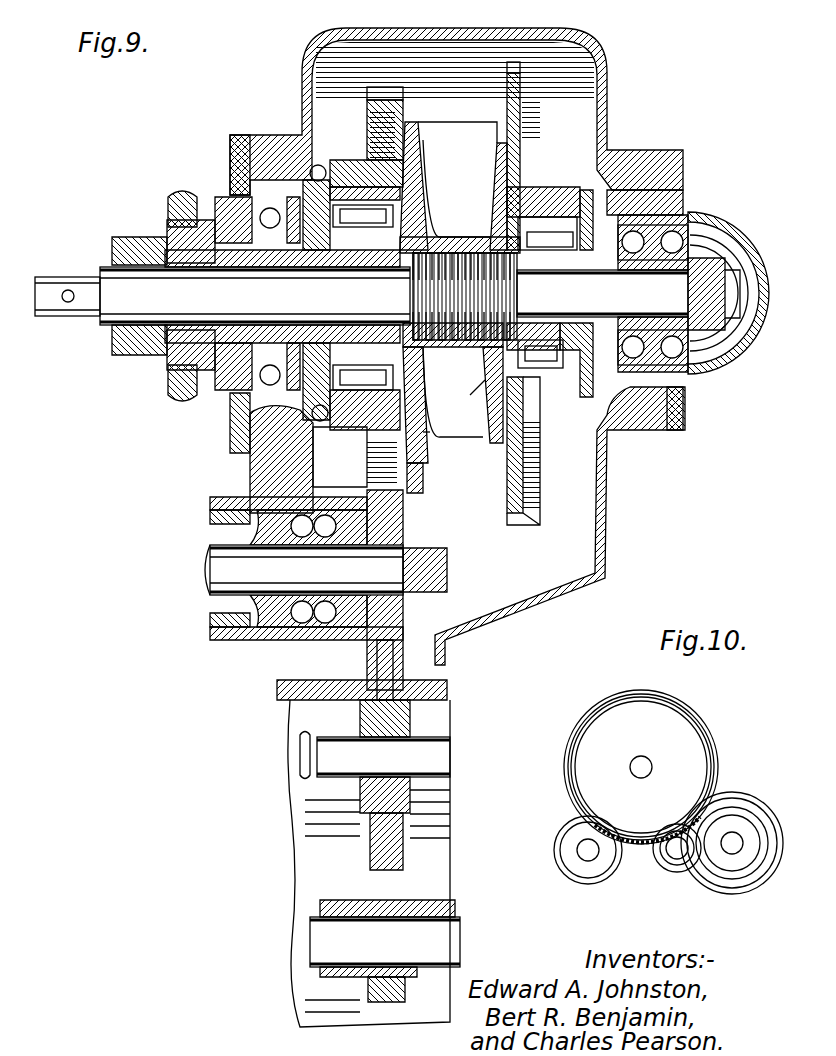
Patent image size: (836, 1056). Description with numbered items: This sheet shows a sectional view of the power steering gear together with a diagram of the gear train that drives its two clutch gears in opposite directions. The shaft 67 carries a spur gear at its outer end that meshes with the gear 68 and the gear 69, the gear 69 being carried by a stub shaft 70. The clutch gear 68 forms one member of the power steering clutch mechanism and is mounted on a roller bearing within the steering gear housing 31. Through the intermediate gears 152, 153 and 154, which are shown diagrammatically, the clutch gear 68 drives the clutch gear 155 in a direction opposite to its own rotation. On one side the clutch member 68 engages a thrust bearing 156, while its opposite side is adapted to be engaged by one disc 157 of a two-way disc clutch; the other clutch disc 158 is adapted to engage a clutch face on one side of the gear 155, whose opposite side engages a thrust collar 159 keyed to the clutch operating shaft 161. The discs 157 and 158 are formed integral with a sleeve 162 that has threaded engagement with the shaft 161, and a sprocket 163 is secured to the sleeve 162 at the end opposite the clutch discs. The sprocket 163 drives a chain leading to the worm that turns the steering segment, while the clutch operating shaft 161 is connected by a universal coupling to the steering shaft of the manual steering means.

In FIG. 9, the steering gear housing 31 is at (640, 430).
In FIG. 9, the shaft 67 is at (205, 585).
In FIG. 10, the shaft 67 is at (585, 848).
In FIG. 9, the clutch gear 68 is at (403, 488).
In FIG. 10, the clutch gear 68 is at (592, 783).
In FIG. 9, the gear 69 is at (372, 663).
In FIG. 9, the stub shaft 70 is at (450, 755).
In FIG. 10, the intermediate gear 152 is at (676, 865).
In FIG. 10, the intermediate gear 153 is at (735, 870).
In FIG. 10, the intermediate gear 154 is at (756, 884).
In FIG. 9, the clutch gear 155 is at (523, 500).
In FIG. 10, the clutch gear 155 is at (716, 785).
In FIG. 9, the thrust bearing 156 is at (322, 165).
In FIG. 9, the clutch disc 157 is at (444, 439).
In FIG. 9, the clutch disc 158 is at (465, 394).
In FIG. 9, the thrust collar 159 is at (585, 190).
In FIG. 9, the clutch operating shaft 161 is at (100, 318).
In FIG. 9, the sleeve 162 is at (167, 360).
In FIG. 9, the sprocket 163 is at (188, 395).